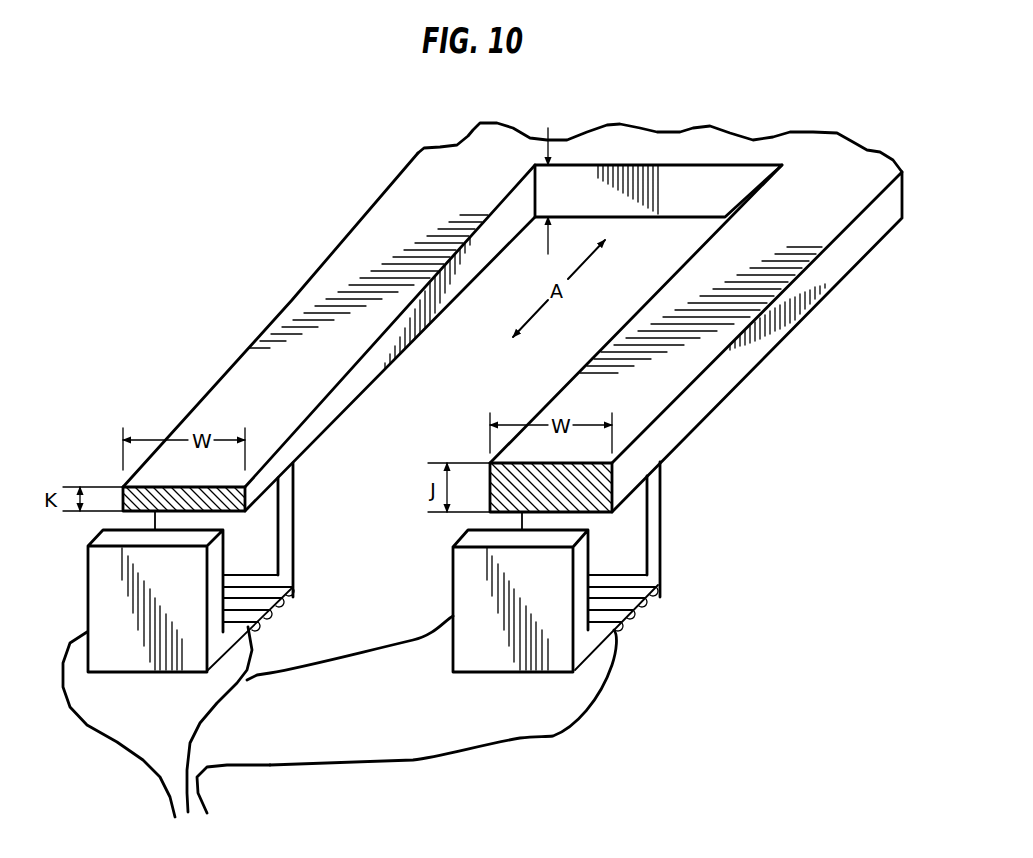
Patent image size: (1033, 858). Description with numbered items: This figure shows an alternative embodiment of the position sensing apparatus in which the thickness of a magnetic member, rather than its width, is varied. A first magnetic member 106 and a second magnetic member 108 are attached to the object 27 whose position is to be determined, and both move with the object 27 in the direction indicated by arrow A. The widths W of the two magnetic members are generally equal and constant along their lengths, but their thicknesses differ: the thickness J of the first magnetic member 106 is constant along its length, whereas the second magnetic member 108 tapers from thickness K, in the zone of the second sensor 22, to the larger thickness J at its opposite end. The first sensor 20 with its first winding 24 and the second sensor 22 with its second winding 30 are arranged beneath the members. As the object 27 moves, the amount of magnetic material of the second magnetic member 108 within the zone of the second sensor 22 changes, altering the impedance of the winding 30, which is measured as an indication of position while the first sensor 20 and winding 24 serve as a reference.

The object 27 is at (856, 171).
The second magnetic member 108 is at (378, 356).
The first magnetic member 106 is at (697, 400).
The second sensor 22 is at (286, 545).
The first sensor 20 is at (650, 545).
The second winding 30 is at (194, 737).
The first winding 24 is at (354, 767).